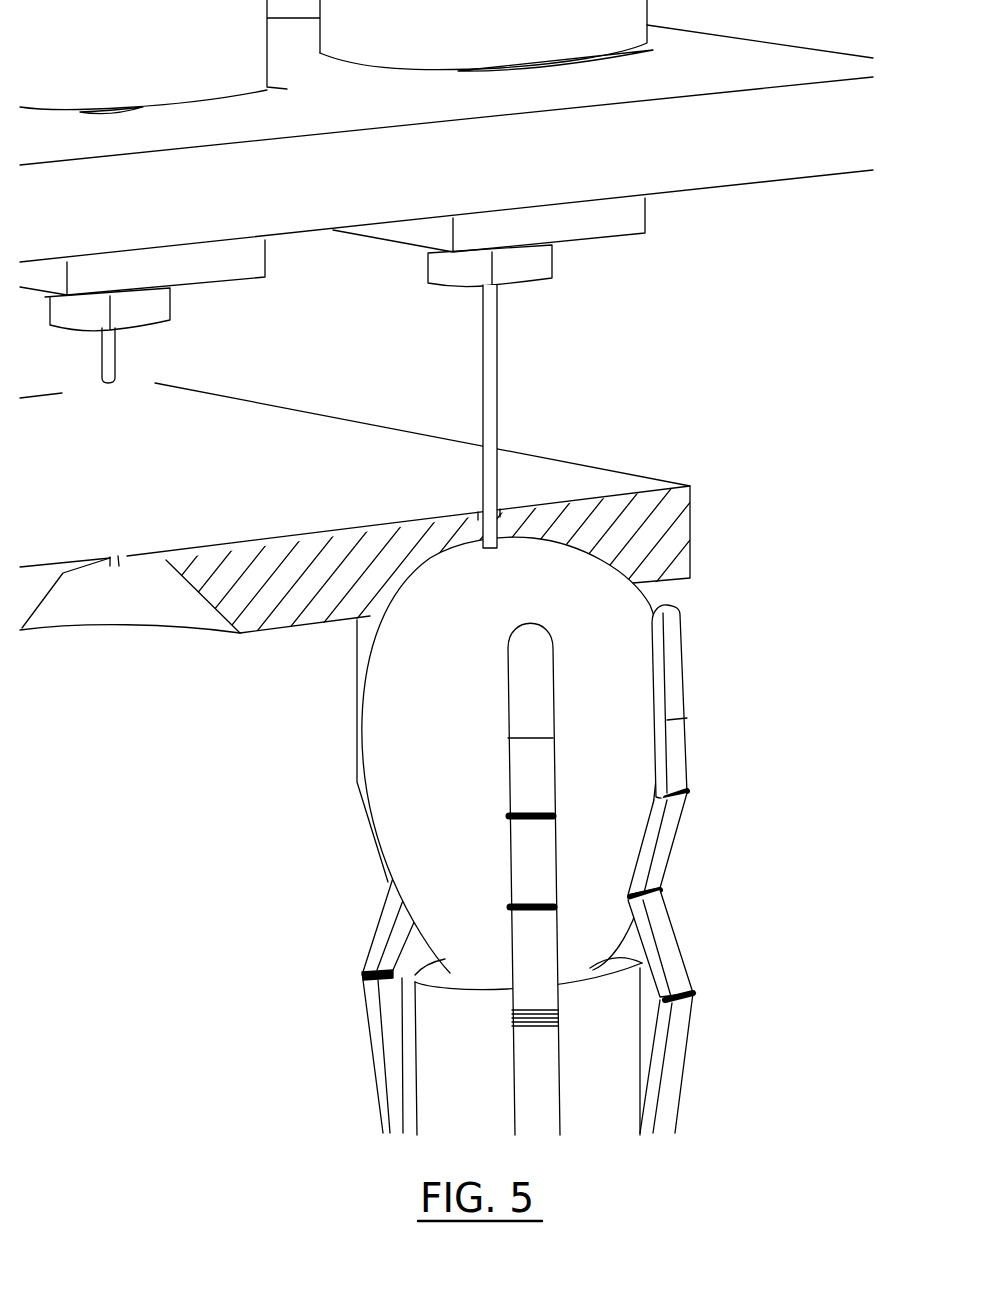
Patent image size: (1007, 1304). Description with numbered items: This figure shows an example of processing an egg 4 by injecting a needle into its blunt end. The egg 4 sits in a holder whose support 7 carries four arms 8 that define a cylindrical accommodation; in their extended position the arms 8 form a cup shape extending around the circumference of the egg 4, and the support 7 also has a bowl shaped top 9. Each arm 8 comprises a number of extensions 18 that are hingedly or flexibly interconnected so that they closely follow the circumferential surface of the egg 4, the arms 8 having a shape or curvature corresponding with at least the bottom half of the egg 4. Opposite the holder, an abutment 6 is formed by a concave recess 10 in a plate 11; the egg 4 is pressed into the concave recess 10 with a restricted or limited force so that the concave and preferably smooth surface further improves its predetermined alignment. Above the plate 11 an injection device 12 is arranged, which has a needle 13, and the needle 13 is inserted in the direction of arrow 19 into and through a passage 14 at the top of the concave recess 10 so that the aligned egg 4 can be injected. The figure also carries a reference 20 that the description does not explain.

The egg 4 is at (388, 763).
The abutment 6 is at (112, 652).
The support 7 is at (430, 1092).
The arms 8 is at (675, 1058).
The bowl shaped top 9 is at (413, 965).
The concave recess 10 is at (535, 531).
The plate 11 is at (633, 483).
The injection device 12 is at (125, 50).
The needle 13 is at (483, 345).
The passage 14 is at (118, 560).
The extensions 18 is at (675, 676).
The arrow 19 is at (702, 608).
The direction of movement 20 is at (522, 295).